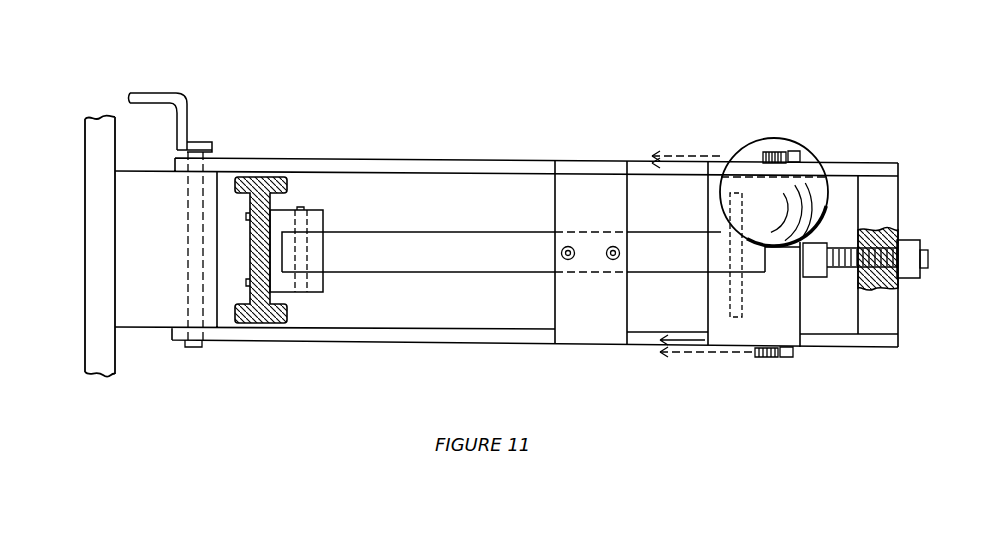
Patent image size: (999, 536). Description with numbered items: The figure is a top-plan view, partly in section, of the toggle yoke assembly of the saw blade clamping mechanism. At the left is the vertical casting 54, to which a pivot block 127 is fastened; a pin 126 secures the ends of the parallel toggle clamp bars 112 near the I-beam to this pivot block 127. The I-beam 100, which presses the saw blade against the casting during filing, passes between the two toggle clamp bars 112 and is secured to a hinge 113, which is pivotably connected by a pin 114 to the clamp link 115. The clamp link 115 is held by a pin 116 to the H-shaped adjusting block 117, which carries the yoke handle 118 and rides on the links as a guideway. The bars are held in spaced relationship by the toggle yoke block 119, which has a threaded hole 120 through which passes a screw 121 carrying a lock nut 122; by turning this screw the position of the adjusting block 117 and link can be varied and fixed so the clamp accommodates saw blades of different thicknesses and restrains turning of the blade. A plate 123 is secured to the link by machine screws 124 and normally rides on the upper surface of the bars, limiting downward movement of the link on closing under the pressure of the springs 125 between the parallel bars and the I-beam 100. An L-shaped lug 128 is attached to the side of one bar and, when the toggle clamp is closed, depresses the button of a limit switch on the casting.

The vertical casting 54 is at (93, 234).
The I-beam 100 is at (267, 318).
The toggle clamp bars 112 is at (345, 163).
The hinge 113 is at (322, 285).
The pin 114 is at (297, 292).
The clamp link 115 is at (430, 265).
The pin 116 is at (735, 300).
The H-shaped adjusting block 117 is at (710, 300).
The yoke handle 118 is at (810, 160).
The toggle yoke block 119 is at (888, 318).
The threaded hole 120 is at (897, 238).
The screw 121 is at (928, 261).
The lock nut 122 is at (903, 273).
The plate 123 is at (577, 337).
The machine screws 124 is at (611, 247).
The springs 125 is at (717, 157).
The pin 126 is at (193, 346).
The pivot block 127 is at (137, 318).
The L-shaped lug 128 is at (165, 96).